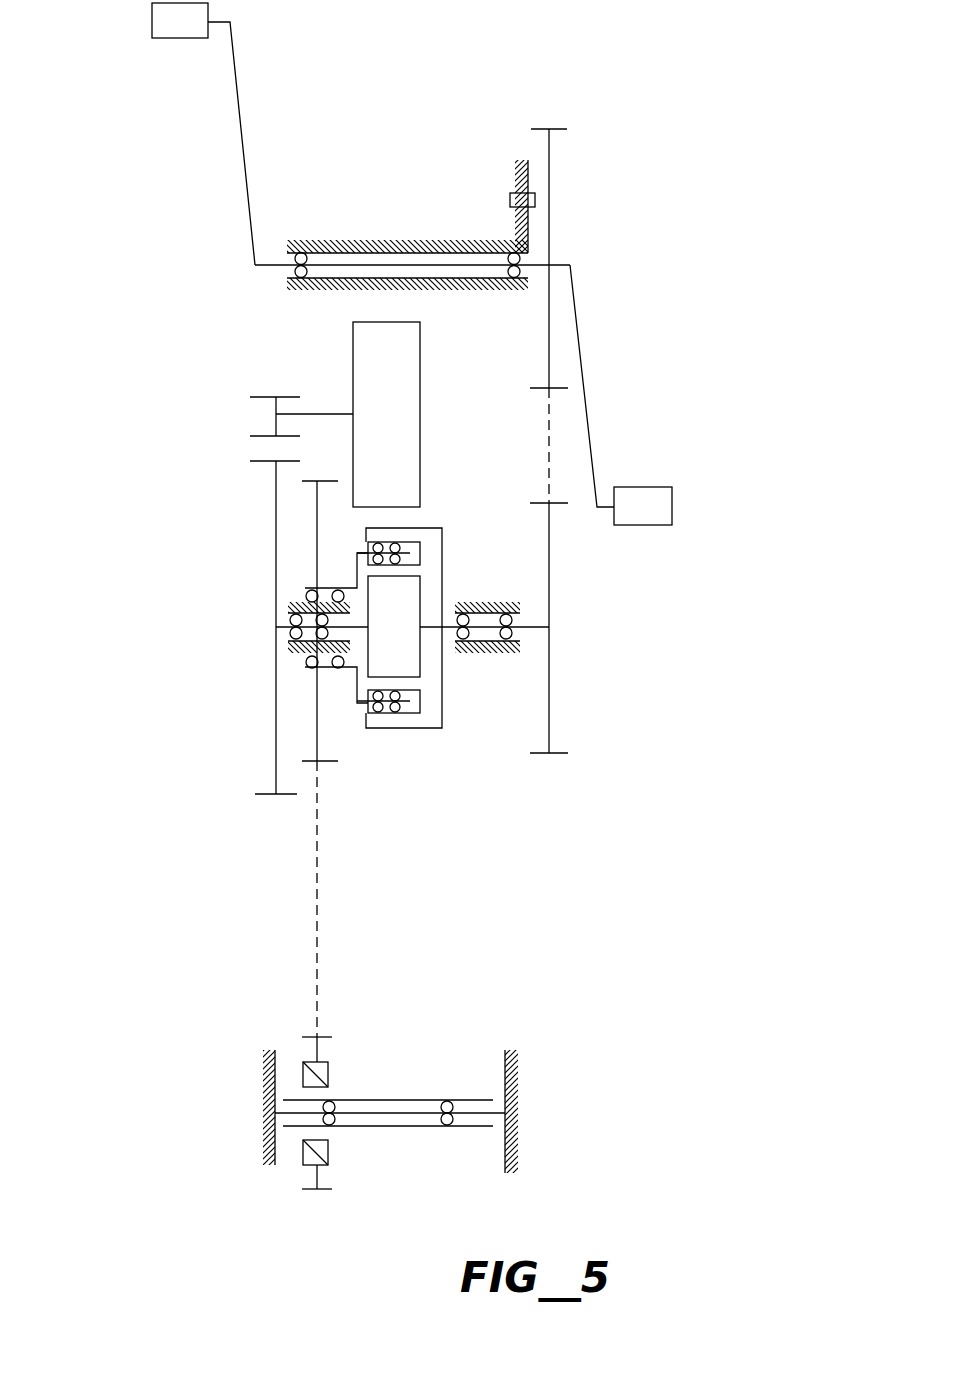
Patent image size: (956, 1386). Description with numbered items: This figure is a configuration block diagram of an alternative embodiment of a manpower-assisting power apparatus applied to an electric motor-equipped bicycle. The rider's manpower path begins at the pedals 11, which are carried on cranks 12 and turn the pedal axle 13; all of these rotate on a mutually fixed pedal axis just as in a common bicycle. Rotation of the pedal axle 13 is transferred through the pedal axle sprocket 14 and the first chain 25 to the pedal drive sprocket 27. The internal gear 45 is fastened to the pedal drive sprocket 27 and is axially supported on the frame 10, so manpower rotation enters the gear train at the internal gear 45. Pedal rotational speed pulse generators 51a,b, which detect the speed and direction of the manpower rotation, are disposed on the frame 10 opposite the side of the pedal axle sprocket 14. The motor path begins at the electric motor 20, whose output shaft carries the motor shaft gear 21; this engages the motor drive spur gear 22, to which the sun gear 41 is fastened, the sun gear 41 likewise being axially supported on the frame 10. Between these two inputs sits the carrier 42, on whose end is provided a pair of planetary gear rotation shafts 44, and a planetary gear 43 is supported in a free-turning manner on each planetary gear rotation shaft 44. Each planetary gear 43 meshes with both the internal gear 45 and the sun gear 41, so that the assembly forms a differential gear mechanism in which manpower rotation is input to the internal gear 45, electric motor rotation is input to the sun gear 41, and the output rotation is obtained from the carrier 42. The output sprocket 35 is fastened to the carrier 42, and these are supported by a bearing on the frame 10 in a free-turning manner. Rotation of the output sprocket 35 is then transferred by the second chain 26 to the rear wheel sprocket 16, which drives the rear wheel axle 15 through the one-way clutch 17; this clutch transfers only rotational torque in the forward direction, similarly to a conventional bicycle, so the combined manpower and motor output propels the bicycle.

The frame 10 is at (528, 248).
The pedals 11 is at (148, 22).
The cranks 12 is at (578, 352).
The pedal axle 13 is at (258, 262).
The pedal axle sprocket 14 is at (553, 128).
The rear wheel axle 15 is at (410, 1100).
The rear wheel sprocket 16 is at (322, 1035).
The one-way clutch 17 is at (328, 1070).
The electric motor 20 is at (353, 352).
The motor shaft gear 21 is at (268, 397).
The motor drive spur gear 22 is at (258, 794).
The first chain 25 is at (549, 478).
The second chain 26 is at (320, 903).
The pedal drive sprocket 27 is at (555, 753).
The output sprocket 35 is at (322, 762).
The sun gear 41 is at (385, 578).
The carrier 42 is at (357, 688).
The planetary gear 43 is at (413, 542).
The planetary gear rotation shafts 44 is at (357, 553).
The internal gear 45 is at (442, 545).
The pedal rotational speed pulse generators 51a,b is at (510, 200).